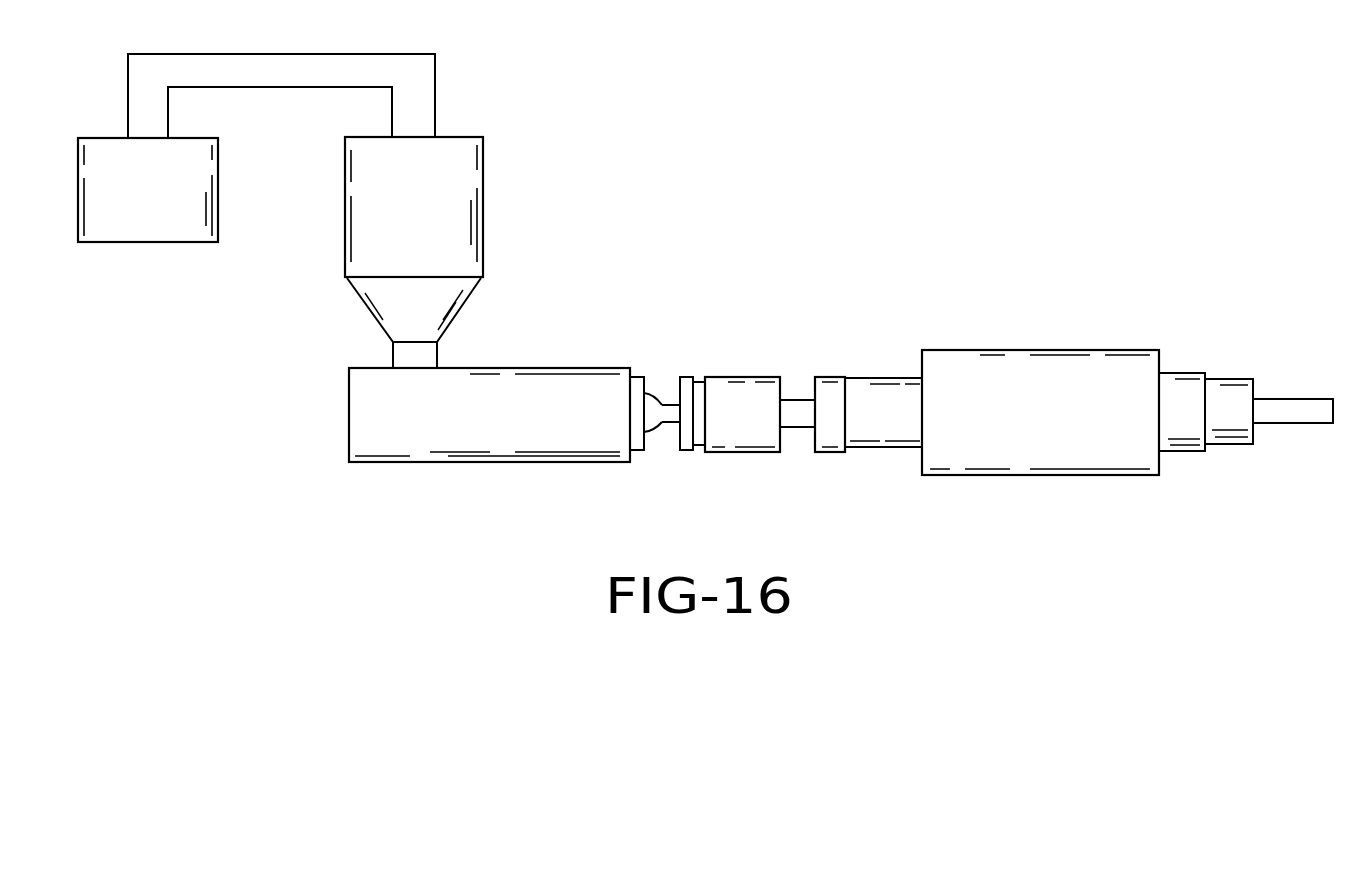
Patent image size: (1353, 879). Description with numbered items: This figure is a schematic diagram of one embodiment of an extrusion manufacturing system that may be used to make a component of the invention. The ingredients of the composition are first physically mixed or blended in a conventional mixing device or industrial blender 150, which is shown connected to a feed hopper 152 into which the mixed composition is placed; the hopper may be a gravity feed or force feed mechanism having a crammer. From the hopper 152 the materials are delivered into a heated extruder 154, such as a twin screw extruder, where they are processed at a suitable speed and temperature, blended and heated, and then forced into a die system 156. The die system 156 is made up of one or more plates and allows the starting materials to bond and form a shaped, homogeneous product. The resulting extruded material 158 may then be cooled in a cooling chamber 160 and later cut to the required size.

The industrial blender 150 is at (126, 207).
The feed hopper 152 is at (392, 223).
The heated extruder 154 is at (468, 432).
The die system 156 is at (825, 352).
The extruded material 158 is at (1285, 424).
The cooling chamber 160 is at (1019, 430).